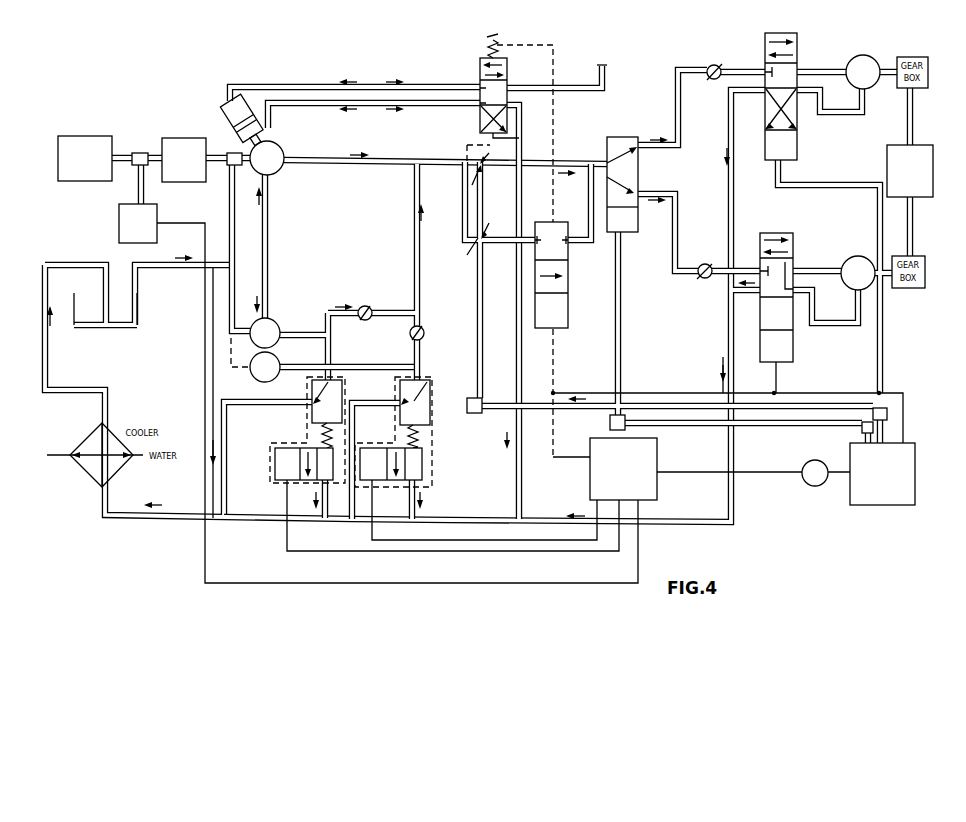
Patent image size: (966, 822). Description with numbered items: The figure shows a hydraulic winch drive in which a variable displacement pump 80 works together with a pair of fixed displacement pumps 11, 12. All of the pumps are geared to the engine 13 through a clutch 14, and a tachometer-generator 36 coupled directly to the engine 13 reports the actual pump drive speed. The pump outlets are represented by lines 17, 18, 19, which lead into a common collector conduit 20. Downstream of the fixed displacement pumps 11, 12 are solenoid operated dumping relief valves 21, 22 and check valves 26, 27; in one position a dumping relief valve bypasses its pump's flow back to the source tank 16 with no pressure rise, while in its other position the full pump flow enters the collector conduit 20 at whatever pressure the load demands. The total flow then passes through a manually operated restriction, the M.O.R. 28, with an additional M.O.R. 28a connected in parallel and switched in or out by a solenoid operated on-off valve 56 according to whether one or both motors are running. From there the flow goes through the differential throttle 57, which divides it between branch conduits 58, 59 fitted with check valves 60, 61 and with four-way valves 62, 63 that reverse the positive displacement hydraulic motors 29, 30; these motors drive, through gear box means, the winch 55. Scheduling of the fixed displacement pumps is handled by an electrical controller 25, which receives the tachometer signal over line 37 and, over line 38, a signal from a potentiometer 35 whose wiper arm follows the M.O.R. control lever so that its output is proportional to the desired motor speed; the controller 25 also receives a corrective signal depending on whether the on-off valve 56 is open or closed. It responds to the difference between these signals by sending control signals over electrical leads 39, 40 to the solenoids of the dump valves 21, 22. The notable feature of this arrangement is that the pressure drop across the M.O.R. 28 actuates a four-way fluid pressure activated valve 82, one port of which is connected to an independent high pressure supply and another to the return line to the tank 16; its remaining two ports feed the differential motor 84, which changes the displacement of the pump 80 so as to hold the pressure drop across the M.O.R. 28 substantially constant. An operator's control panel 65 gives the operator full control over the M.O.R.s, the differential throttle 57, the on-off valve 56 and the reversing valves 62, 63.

The fixed displacement pump 11 is at (276, 322).
The fixed displacement pump 12 is at (277, 375).
The engine 13 is at (92, 136).
The clutch 14 is at (207, 167).
The source tank 16 is at (138, 305).
The line 17 is at (315, 163).
The line 18 is at (300, 334).
The line 19 is at (297, 367).
The collector conduit 20 is at (465, 162).
The solenoid operated dumping relief valve 21 is at (303, 440).
The solenoid operated dumping relief valve 22 is at (430, 470).
The controller 25 is at (658, 462).
The check valve 26 is at (360, 307).
The check valve 27 is at (424, 333).
The manually operated restriction (M.O.R.) 28 is at (483, 166).
The additional M.O.R. 28a is at (485, 242).
The hydraulic motor 29 is at (868, 86).
The hydraulic motor 30 is at (853, 257).
The potentiometer 35 is at (822, 486).
The tachometer-generator 36 is at (157, 216).
The line 37 is at (513, 585).
The line 38 is at (767, 471).
The electrical lead 39 is at (337, 540).
The electrical lead 40 is at (530, 540).
The winch 55 is at (933, 165).
The solenoid operated on-off valve 56 is at (570, 310).
The differential throttle 57 is at (639, 176).
The branch conduit 58 is at (679, 113).
The branch conduit 59 is at (676, 235).
The check valve 60 is at (707, 66).
The check valve 61 is at (699, 278).
The four-way valve 62 is at (798, 60).
The four-way valve 63 is at (794, 260).
The operator's control panel 65 is at (916, 488).
The variable displacement pump 80 is at (278, 169).
The four-way fluid pressure activated valve 82 is at (508, 79).
The differential motor 84 is at (229, 115).